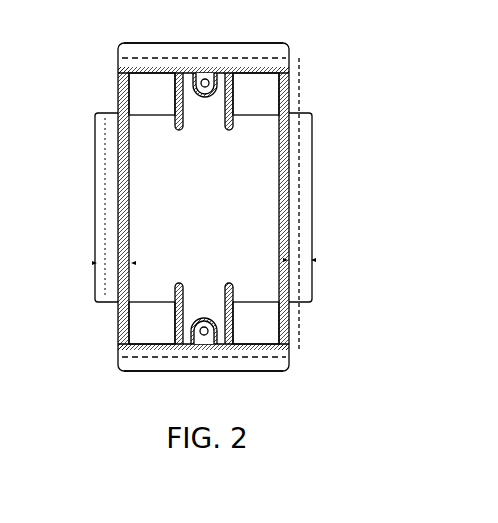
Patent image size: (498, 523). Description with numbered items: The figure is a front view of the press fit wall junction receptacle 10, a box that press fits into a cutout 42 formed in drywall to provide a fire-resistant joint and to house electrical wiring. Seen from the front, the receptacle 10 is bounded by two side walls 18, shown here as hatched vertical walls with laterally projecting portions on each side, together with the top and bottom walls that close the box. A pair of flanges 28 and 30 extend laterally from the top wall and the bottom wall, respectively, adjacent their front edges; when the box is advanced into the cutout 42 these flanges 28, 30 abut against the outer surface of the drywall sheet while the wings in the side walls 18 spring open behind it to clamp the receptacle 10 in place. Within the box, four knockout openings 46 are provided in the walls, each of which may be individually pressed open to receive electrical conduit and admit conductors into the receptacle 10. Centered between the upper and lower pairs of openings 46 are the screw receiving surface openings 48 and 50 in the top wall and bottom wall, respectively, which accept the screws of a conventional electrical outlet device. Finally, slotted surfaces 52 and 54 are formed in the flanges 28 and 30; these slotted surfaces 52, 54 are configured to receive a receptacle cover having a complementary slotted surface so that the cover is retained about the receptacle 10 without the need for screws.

The press fit wall junction receptacle 10 is at (379, 36).
The side wall 18 is at (114, 104).
The flange 28 is at (198, 43).
The flange 30 is at (210, 372).
The cutout 42 is at (300, 325).
The knockout openings 46 is at (204, 208).
The screw receiving surface opening 48 is at (205, 98).
The screw receiving surface opening 50 is at (207, 312).
The slotted surface 52 is at (262, 43).
The slotted surface 54 is at (253, 372).